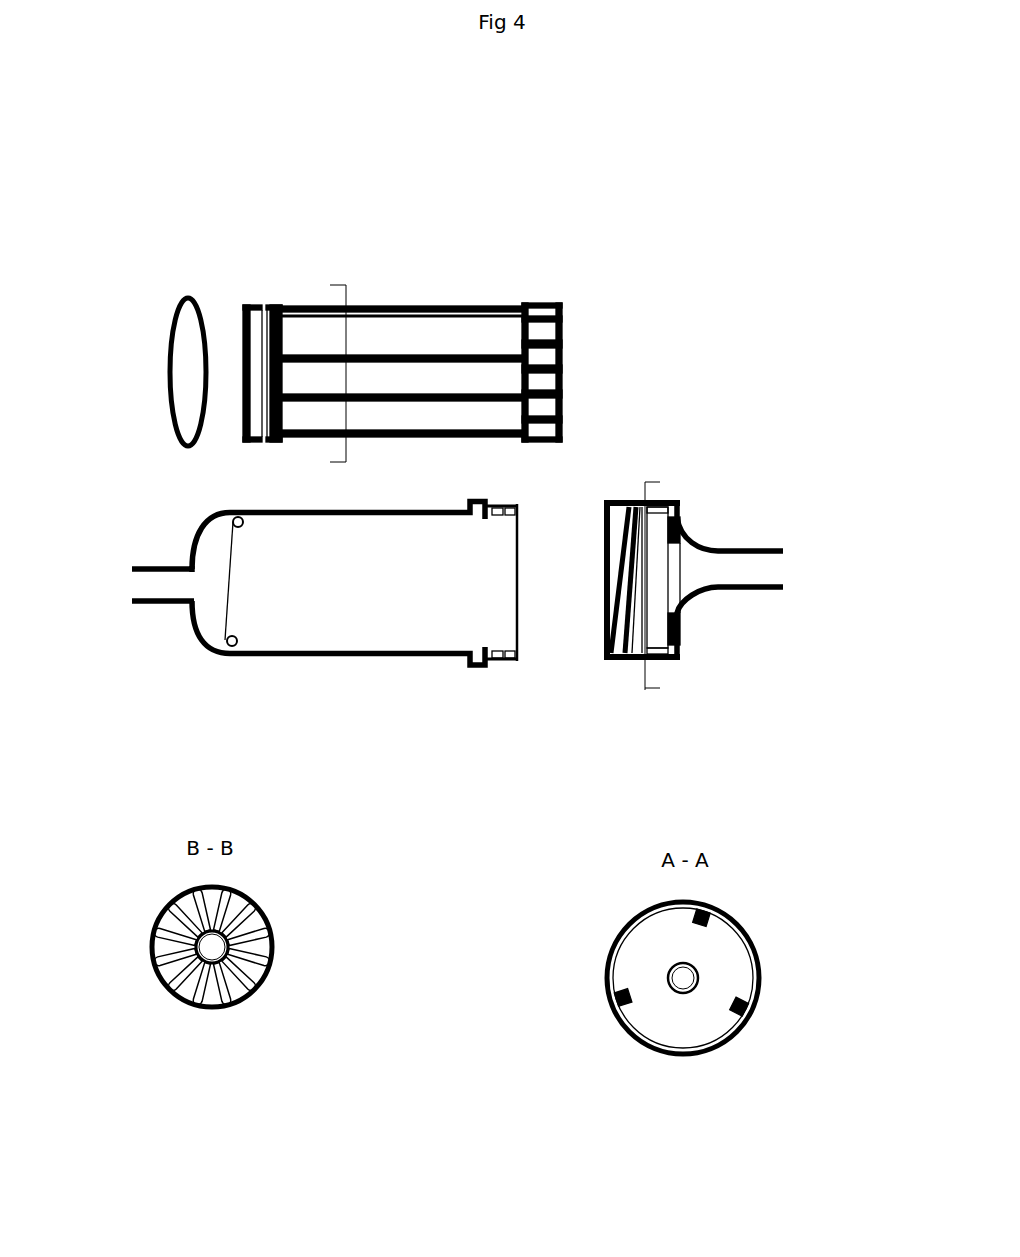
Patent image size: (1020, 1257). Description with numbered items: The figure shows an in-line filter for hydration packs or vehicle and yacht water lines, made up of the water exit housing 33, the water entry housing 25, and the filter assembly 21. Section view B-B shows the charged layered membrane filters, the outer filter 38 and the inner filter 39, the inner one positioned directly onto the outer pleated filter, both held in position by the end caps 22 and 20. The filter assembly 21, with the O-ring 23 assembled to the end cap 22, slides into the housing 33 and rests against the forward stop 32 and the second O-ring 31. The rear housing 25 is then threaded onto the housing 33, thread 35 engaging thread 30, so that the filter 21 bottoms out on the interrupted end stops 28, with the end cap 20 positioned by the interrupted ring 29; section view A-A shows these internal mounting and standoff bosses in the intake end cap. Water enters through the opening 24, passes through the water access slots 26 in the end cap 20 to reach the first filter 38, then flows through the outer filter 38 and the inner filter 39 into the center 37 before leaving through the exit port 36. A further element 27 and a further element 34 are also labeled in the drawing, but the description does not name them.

The end cap 20 is at (383, 598).
The filter assembly 21 is at (477, 300).
The end cap 22 is at (266, 299).
The O-ring 23 is at (177, 308).
The opening 24 is at (785, 563).
The water entry housing 25 is at (679, 717).
The water access slots 26 is at (540, 392).
The filter element 27 is at (613, 552).
The interrupted end stops 28 is at (687, 622).
The interrupted ring 29 is at (680, 657).
The thread 30 is at (605, 640).
The second O-ring 31 is at (260, 653).
The forward stop 32 is at (210, 647).
The water exit housing 33 is at (183, 560).
The housing 34 is at (298, 740).
The thread 35 is at (515, 663).
The exit port 36 is at (130, 588).
The center 37 is at (207, 952).
The outer charged layered membrane filter 38 is at (257, 903).
The inner charged layered membrane filter 39 is at (195, 947).